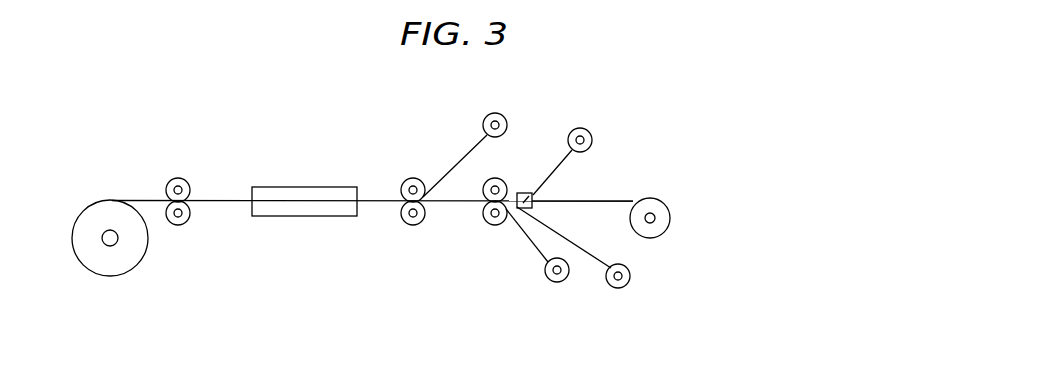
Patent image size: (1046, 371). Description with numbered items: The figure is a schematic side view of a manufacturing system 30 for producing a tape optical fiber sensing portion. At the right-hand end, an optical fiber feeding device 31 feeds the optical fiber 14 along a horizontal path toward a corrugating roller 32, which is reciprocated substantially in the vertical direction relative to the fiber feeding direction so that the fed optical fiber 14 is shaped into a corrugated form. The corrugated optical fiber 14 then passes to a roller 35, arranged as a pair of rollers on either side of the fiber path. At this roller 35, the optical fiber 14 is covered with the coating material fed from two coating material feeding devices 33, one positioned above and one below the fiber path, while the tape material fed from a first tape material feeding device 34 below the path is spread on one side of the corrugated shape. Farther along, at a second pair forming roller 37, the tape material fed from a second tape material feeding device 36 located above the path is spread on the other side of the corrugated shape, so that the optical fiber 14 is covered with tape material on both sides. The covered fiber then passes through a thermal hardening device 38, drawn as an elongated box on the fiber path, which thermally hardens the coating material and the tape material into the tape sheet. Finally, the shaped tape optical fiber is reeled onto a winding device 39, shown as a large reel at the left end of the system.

The manufacturing system 30 is at (673, 96).
The optical fiber 14 is at (590, 200).
The optical fiber feeding device 31 is at (660, 207).
The corrugating roller 32 is at (532, 196).
The coating material feeding device 33 is at (573, 134).
The first tape material feeding device 34 is at (552, 278).
The roller 35 is at (487, 218).
The second tape material feeding device 36 is at (487, 120).
The roller 37 is at (408, 220).
The thermal hardening device 38 is at (298, 186).
The winding device 39 is at (110, 266).